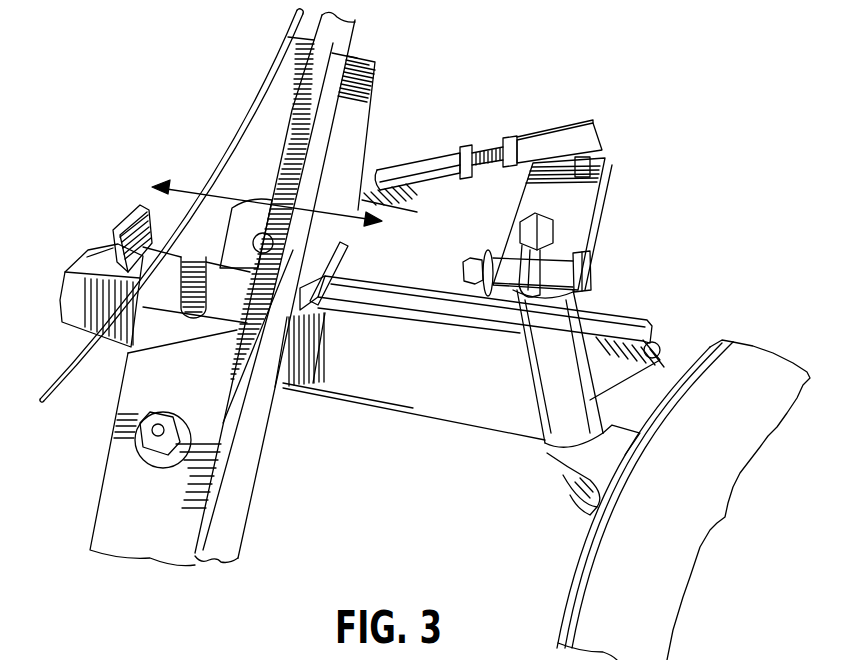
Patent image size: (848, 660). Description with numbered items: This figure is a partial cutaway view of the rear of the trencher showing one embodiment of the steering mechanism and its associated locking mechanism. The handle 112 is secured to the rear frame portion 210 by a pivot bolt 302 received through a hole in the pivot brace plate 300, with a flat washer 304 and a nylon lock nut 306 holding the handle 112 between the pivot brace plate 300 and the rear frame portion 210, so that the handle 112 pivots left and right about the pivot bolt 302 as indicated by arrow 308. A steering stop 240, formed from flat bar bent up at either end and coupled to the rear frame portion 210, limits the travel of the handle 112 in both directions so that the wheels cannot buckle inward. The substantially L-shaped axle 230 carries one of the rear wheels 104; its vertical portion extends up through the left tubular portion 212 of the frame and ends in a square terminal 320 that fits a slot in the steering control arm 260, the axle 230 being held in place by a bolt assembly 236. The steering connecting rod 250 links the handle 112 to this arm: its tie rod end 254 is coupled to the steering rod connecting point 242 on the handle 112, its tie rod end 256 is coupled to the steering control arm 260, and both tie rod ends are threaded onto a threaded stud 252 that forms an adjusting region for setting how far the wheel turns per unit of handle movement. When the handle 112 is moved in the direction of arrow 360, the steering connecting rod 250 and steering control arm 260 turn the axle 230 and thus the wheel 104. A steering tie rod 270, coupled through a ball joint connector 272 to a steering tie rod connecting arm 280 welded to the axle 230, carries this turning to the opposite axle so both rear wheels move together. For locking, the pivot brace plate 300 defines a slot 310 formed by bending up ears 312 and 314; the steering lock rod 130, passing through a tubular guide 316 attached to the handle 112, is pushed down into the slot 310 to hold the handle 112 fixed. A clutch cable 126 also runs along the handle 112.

The wheel 104 is at (707, 510).
The handle 112 is at (390, 90).
The clutch cable 126 is at (263, 88).
The steering lock rod 130 is at (327, 40).
The rear frame portion 210 is at (427, 367).
The left tubular portion 212 is at (563, 423).
The axle 230 is at (590, 487).
The bolt assembly 236 is at (593, 270).
The steering stop 240 is at (117, 220).
The steering rod connecting point 242 is at (390, 157).
The steering connecting rod 250 is at (545, 103).
The threaded stud 252 is at (495, 147).
The tie rod end 254 is at (440, 147).
The tie rod end 256 is at (593, 125).
The steering control arm 260 is at (567, 213).
The steering tie rod 270 is at (410, 287).
The ball joint connector 272 is at (660, 342).
The steering tie rod connecting arm 280 is at (667, 377).
The pivot brace plate 300 is at (197, 420).
The pivot bolt 302 is at (136, 427).
The flat washer 304 is at (190, 440).
The nylon lock nut 306 is at (157, 463).
The arrow 308 is at (181, 178).
The slot 310 is at (150, 290).
The ear 312 is at (130, 294).
The ear 314 is at (223, 287).
The tubular guide 316 is at (270, 228).
The square terminal 320 is at (558, 233).
The arrow 360 is at (618, 180).